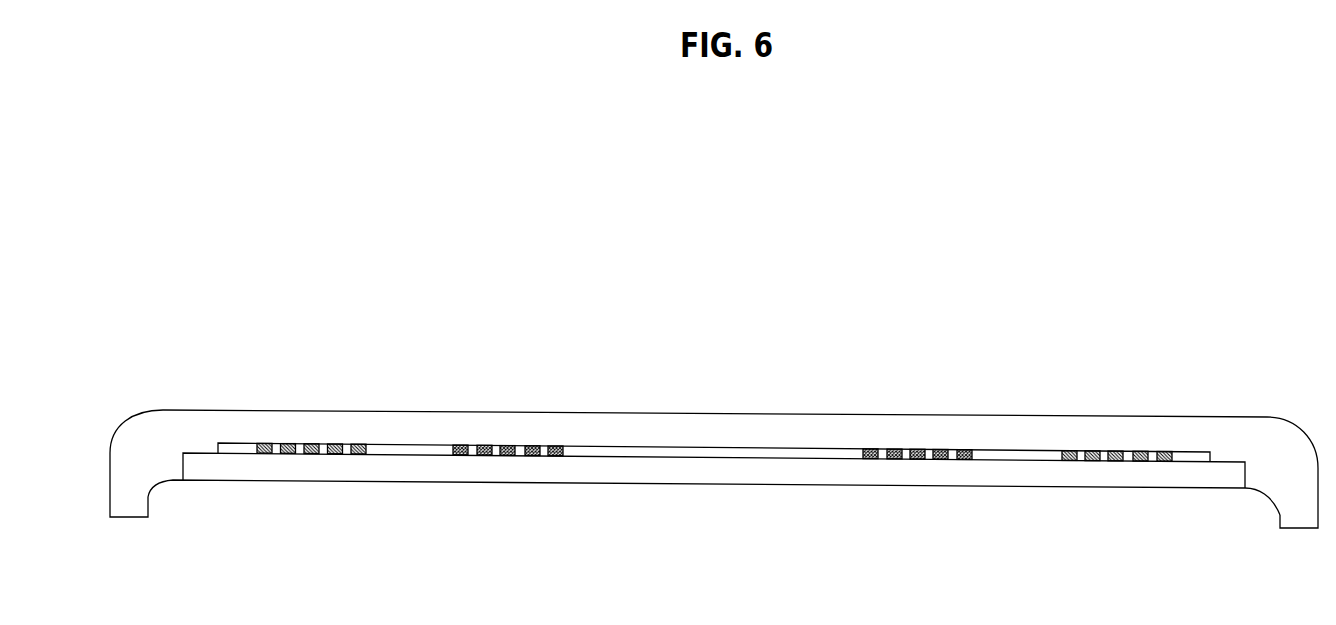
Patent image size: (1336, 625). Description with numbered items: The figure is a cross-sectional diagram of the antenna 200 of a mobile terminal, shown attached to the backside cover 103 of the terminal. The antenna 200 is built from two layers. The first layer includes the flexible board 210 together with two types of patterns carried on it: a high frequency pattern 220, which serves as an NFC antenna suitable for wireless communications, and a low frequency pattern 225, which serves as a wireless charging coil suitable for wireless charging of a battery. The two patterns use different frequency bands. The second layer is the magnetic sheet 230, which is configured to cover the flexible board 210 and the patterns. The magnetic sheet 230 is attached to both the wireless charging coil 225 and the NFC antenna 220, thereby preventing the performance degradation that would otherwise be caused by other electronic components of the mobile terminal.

The antenna 200 is at (714, 451).
The backside cover 103 is at (148, 485).
The flexible board 210 is at (714, 424).
The high frequency pattern 220 is at (359, 445).
The low frequency pattern 225 is at (554, 446).
The magnetic sheet 230 is at (467, 485).